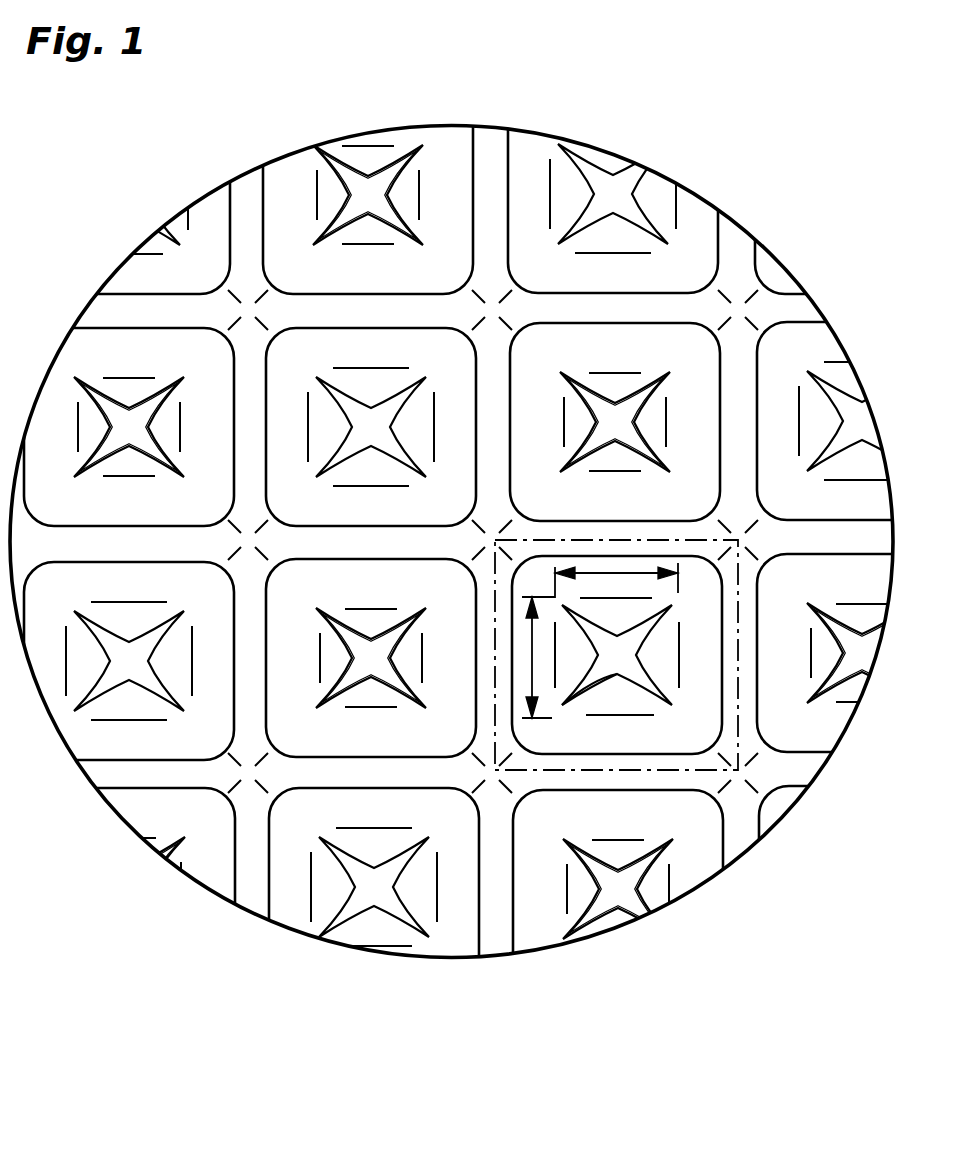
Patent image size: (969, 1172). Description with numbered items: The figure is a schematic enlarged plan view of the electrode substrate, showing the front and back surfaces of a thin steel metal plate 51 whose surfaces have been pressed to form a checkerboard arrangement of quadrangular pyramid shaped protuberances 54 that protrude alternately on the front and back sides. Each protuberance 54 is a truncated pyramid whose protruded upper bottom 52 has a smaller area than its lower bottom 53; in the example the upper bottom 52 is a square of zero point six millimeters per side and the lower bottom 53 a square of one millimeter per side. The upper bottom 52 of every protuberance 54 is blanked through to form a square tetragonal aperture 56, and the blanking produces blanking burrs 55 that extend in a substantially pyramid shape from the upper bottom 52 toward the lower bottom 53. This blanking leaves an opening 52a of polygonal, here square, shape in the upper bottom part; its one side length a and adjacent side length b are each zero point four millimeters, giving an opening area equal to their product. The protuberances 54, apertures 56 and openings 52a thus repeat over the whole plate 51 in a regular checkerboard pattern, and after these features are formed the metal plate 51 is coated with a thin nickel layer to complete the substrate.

The metal plate 51 is at (734, 248).
The upper bottom 52 is at (662, 732).
The opening 52a is at (680, 654).
The lower bottom 53 is at (495, 588).
The protuberances 54 is at (535, 933).
The blanking burrs 55 is at (653, 430).
The aperture 56 is at (599, 688).
The one side length of the opening a is at (610, 570).
The adjacent side length of the opening b is at (532, 658).